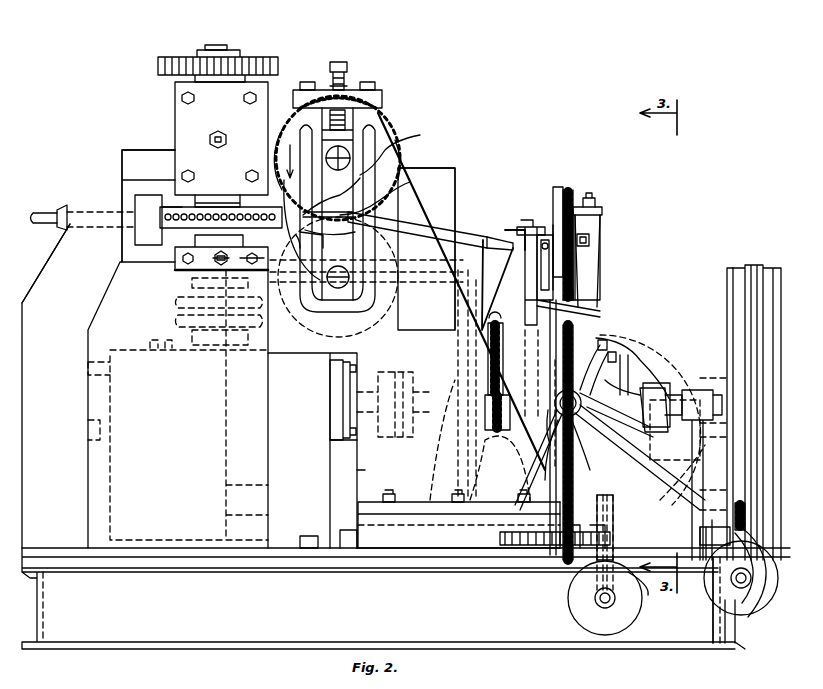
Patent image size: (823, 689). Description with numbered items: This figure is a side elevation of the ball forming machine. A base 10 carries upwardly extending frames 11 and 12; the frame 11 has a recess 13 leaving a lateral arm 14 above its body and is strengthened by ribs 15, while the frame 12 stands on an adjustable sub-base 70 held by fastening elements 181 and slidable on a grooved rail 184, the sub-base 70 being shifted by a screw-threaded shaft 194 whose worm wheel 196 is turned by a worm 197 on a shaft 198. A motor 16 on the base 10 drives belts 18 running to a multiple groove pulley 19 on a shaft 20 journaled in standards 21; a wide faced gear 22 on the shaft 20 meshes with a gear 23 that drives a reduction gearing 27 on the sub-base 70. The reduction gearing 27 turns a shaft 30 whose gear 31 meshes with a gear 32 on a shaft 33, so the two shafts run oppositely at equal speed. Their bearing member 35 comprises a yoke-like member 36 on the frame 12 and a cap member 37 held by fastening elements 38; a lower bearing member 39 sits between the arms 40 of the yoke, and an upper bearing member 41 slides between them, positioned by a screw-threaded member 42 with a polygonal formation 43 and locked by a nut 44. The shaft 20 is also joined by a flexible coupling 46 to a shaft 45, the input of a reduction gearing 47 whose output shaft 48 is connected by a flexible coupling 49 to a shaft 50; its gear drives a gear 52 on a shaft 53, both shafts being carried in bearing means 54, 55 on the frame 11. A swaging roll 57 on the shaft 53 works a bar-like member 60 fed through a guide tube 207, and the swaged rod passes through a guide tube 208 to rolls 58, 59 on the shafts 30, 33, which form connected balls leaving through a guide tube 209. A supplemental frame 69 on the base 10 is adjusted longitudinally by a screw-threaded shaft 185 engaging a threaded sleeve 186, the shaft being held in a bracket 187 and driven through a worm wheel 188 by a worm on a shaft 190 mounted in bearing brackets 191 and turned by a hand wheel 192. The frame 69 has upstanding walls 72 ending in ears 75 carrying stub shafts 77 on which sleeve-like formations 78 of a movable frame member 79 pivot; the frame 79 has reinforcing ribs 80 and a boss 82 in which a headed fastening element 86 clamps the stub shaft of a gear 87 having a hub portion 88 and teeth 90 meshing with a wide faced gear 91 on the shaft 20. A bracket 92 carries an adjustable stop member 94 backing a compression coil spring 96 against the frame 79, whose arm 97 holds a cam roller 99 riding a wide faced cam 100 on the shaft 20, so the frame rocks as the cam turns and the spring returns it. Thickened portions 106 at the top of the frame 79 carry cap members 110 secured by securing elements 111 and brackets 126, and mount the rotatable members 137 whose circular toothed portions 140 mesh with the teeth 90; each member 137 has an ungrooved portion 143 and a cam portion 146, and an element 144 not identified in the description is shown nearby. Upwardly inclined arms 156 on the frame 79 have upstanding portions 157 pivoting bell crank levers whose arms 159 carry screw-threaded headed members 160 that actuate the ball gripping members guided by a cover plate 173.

The base 10 is at (215, 632).
The frame 11 is at (100, 334).
The frame 12 is at (448, 306).
The recess 13 is at (145, 200).
The lateral arm 14 is at (165, 160).
The ribs 15 is at (52, 262).
The motor 16 is at (655, 372).
The belts 18 is at (735, 265).
The multiple groove pulley 19 is at (720, 320).
The shaft 20 is at (720, 390).
The standards 21 is at (420, 526).
The wide faced gear 22 is at (503, 360).
The gear 23 is at (503, 318).
The reduction gearing 27 is at (444, 193).
The shaft 30 is at (350, 280).
The gear 31 is at (290, 350).
The gear 32 is at (292, 128).
The shaft 33 is at (368, 148).
The bearing member 35 is at (378, 100).
The yoke-like member 36 is at (430, 178).
The cap member 37 is at (352, 96).
The fastening elements 38 is at (305, 82).
The lower bearing member 39 is at (350, 300).
The arms 40 is at (350, 162).
The upper bearing member 41 is at (392, 128).
The screw-threaded member 42 is at (345, 110).
The polygonal formation 43 is at (338, 62).
The nut 44 is at (326, 90).
The shaft 45 is at (350, 405).
The flexible coupling 46 is at (395, 365).
The reduction gearing 47 is at (318, 460).
The output shaft 48 is at (212, 356).
The flexible coupling 49 is at (178, 320).
The shaft 50 is at (178, 292).
The gear 52 is at (263, 57).
The shaft 53 is at (228, 45).
The bearing means 54 is at (198, 122).
The bearing means 55 is at (175, 268).
The roll 57 is at (175, 205).
The roll 58 is at (315, 340).
The roll 59 is at (400, 132).
The bar-like member 60 is at (52, 226).
The supplemental frame 69 is at (650, 585).
The sub-base 70 is at (462, 540).
The upstanding walls 72 is at (618, 500).
The ears 75 is at (556, 428).
The stub shafts 77 is at (582, 418).
The sleeve-like formations 78 is at (556, 395).
The movable frame member 79 is at (604, 340).
The reinforcing ribs 80 is at (570, 320).
The boss 82 is at (614, 385).
The headed fastening element 86 is at (655, 388).
The gear 87 is at (577, 440).
The hub portion 88 is at (546, 416).
The teeth 90 is at (575, 308).
The wide faced gear 91 is at (555, 358).
The bracket 92 is at (621, 375).
The adjustable stop member 94 is at (625, 352).
The compression coil spring 96 is at (615, 352).
The arm 97 is at (595, 415).
The cam roller 99 is at (665, 455).
The wide faced cam 100 is at (712, 395).
The thickened portions 106 is at (592, 255).
The cap members 110 is at (595, 212).
The securing elements 111 is at (590, 198).
The bracket 126 is at (590, 239).
The rotatable member 137 is at (562, 195).
The circular toothed portion 140 is at (570, 200).
The portion 143 is at (565, 187).
The pulley 144 is at (572, 282).
The cam portion 146 is at (554, 220).
The upwardly inclined arms 156 is at (525, 318).
The upstanding portions 157 is at (517, 240).
The arms 159 is at (512, 235).
The screw-threaded headed members 160 is at (545, 240).
The cover plate 173 is at (538, 240).
The fastening elements 181 is at (396, 494).
The rail 184 is at (346, 556).
The screw-threaded shaft 185 is at (705, 565).
The threaded sleeve 186 is at (700, 560).
The bracket 187 is at (758, 584).
The worm wheel 188 is at (748, 602).
The shaft 190 is at (745, 605).
The bearing brackets 191 is at (713, 605).
The hand wheel 192 is at (738, 620).
The screw-threaded shaft 194 is at (530, 560).
The worm wheel 196 is at (620, 522).
The worm 197 is at (595, 600).
The shaft 198 is at (590, 598).
The guide tube 207 is at (68, 206).
The guide tube 208 is at (308, 212).
The guide tube 209 is at (450, 235).